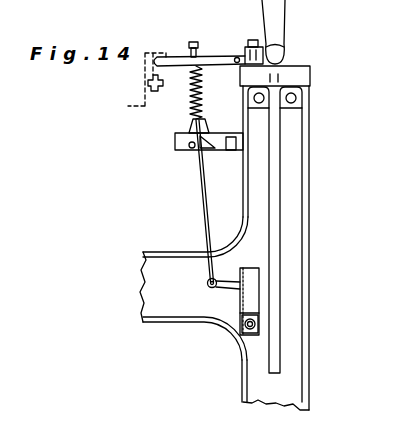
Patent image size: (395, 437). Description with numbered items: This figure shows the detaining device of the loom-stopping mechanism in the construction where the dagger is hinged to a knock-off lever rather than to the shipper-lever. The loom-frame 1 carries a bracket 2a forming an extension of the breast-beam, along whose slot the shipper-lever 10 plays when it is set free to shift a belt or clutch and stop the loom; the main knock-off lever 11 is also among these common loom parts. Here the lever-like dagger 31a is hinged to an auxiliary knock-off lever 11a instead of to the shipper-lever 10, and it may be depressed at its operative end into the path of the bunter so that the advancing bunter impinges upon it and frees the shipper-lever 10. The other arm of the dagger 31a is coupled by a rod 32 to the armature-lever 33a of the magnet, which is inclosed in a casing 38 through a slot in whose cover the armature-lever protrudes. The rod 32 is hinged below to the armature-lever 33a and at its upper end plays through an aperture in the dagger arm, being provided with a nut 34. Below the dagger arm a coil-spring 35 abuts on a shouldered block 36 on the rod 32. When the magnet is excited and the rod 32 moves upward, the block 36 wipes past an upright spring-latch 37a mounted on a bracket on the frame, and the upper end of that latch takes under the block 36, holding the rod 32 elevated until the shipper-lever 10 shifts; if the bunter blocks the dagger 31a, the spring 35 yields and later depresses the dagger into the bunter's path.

The loom-frame 1 is at (275, 297).
The bracket 2a is at (297, 75).
The shipper-lever 10 is at (270, 167).
The main knock-off lever 11 is at (285, 62).
The auxiliary knock-off lever 11a is at (281, 50).
The dagger 31a is at (220, 55).
The rod 32 is at (209, 215).
The armature-lever 33a is at (233, 286).
The nut 34 is at (179, 42).
The coil-spring 35 is at (204, 82).
The block 36 is at (183, 120).
The upright spring-latch 37a is at (184, 144).
The casing 38 is at (252, 298).